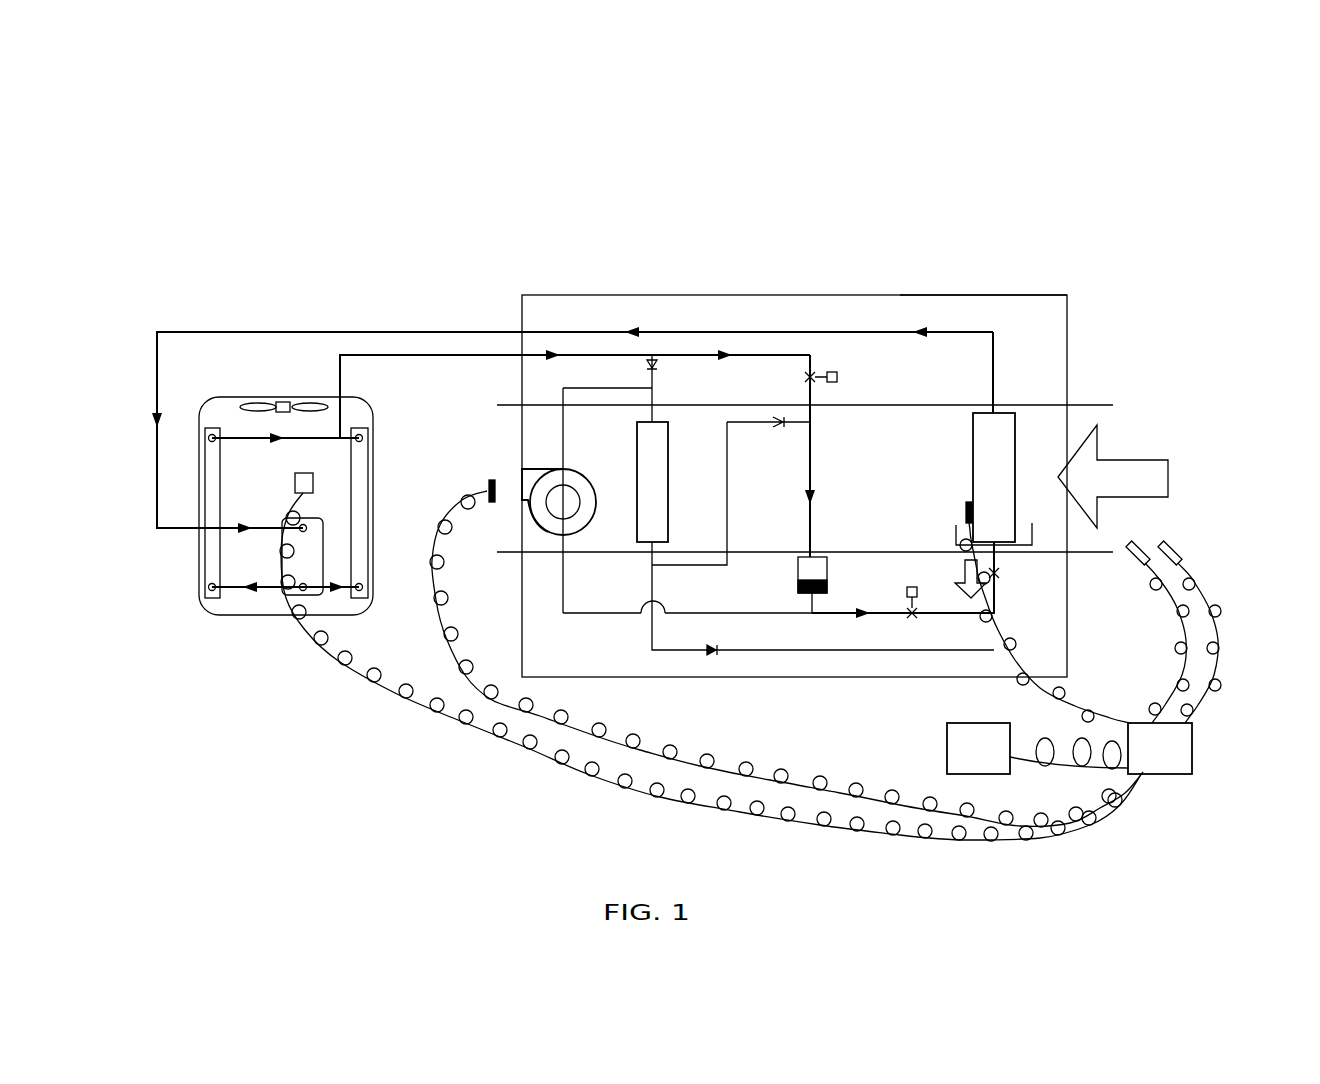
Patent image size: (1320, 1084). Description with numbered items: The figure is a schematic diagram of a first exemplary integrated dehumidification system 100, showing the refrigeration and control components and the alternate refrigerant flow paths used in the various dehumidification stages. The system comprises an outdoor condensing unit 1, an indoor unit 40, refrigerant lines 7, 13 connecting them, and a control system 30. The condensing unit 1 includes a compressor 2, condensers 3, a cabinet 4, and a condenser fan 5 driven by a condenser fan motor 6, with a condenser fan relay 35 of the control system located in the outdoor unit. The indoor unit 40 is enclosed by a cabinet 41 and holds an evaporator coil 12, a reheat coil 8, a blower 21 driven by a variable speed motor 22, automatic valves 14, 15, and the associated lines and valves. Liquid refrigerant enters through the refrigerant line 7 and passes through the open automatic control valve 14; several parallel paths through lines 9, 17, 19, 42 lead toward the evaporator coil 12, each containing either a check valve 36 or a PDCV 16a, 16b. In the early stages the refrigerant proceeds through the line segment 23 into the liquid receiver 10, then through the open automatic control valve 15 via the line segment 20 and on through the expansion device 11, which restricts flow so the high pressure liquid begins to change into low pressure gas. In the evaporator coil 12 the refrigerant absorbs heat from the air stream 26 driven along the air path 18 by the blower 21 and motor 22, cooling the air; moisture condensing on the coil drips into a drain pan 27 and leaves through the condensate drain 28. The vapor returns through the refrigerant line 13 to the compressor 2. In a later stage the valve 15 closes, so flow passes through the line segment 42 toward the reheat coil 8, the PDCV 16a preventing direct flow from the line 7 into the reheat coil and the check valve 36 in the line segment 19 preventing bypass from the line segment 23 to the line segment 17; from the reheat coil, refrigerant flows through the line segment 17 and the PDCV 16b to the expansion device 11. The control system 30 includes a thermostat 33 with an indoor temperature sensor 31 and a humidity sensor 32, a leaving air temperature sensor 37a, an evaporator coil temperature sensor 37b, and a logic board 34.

The integrated dehumidification system 100 is at (1050, 155).
The indoor unit 40 is at (566, 286).
The enclosing cabinet 41 is at (967, 296).
The refrigerant line 13 is at (235, 332).
The refrigerant line 7 is at (400, 360).
The cabinet 4 is at (378, 420).
The outdoor condensing unit 1 is at (392, 609).
The condensers 3 is at (205, 565).
The compressor 2 is at (300, 598).
The condenser fan relay 35 is at (316, 485).
The condenser fan 5 is at (250, 405).
The condenser fan motor 6 is at (280, 400).
The leaving air temperature sensor 37a is at (488, 480).
The blower 21 is at (533, 475).
The variable speed motor 22 is at (560, 508).
The air path 18 is at (793, 479).
The reheat coil 8 is at (645, 470).
The line 9 is at (654, 405).
The PDCV 16a is at (635, 365).
The automatic control valve 14 is at (825, 362).
The line segment 23 is at (812, 445).
The check valve 36 is at (768, 410).
The line segment 19 is at (689, 493).
The liquid receiver 10 is at (820, 565).
The line segment 42 is at (687, 600).
The line segment 17 is at (647, 625).
The PDCV 16b is at (823, 598).
The line segment 20 is at (903, 580).
The automatic control valve 15 is at (910, 590).
The expansion device 11 is at (1000, 570).
The condensate drain 28 is at (963, 579).
The drain pan 27 is at (957, 525).
The evaporator coil temperature sensor 37b is at (965, 500).
The evaporator coil 12 is at (1000, 435).
The air stream 26 is at (1113, 476).
The humidity sensor 32 is at (1157, 632).
The indoor temperature sensor 31 is at (1199, 632).
The thermostat 33 is at (975, 762).
The logic board 34 is at (1153, 760).
The control system 30 is at (1159, 818).